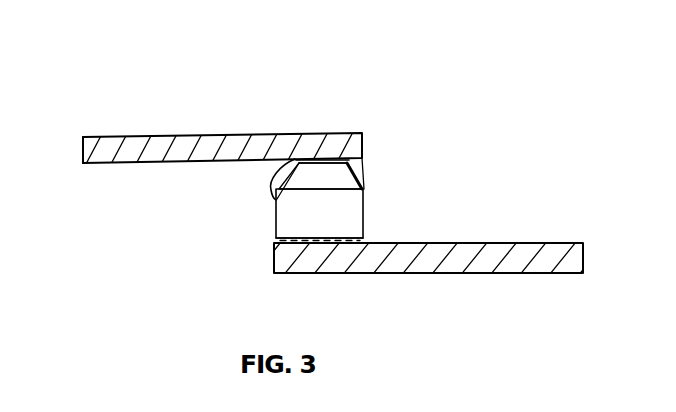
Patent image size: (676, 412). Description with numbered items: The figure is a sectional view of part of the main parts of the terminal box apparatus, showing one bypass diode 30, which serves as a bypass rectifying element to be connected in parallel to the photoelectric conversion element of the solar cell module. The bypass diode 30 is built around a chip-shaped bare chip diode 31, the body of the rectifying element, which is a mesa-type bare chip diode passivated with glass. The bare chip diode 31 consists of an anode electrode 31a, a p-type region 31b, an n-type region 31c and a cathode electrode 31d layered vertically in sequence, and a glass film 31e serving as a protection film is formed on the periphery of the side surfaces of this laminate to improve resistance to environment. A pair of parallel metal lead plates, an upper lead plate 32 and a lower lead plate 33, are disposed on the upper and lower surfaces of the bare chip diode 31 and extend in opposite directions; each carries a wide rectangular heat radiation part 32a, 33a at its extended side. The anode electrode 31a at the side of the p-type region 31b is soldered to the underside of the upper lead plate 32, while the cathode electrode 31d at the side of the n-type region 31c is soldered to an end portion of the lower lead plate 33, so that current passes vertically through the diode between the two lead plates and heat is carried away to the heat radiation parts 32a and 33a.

The bypass diode 30 is at (329, 109).
The bare chip diode 31 is at (264, 216).
The anode electrode 31a is at (368, 165).
The p-type region 31b is at (343, 181).
The n-type region 31c is at (353, 218).
The cathode electrode 31d is at (370, 239).
The glass film 31e is at (363, 166).
The upper lead plate 32 is at (180, 137).
The heat radiation part 32a is at (103, 137).
The lower lead plate 33 is at (518, 262).
The heat radiation part 33a is at (412, 271).